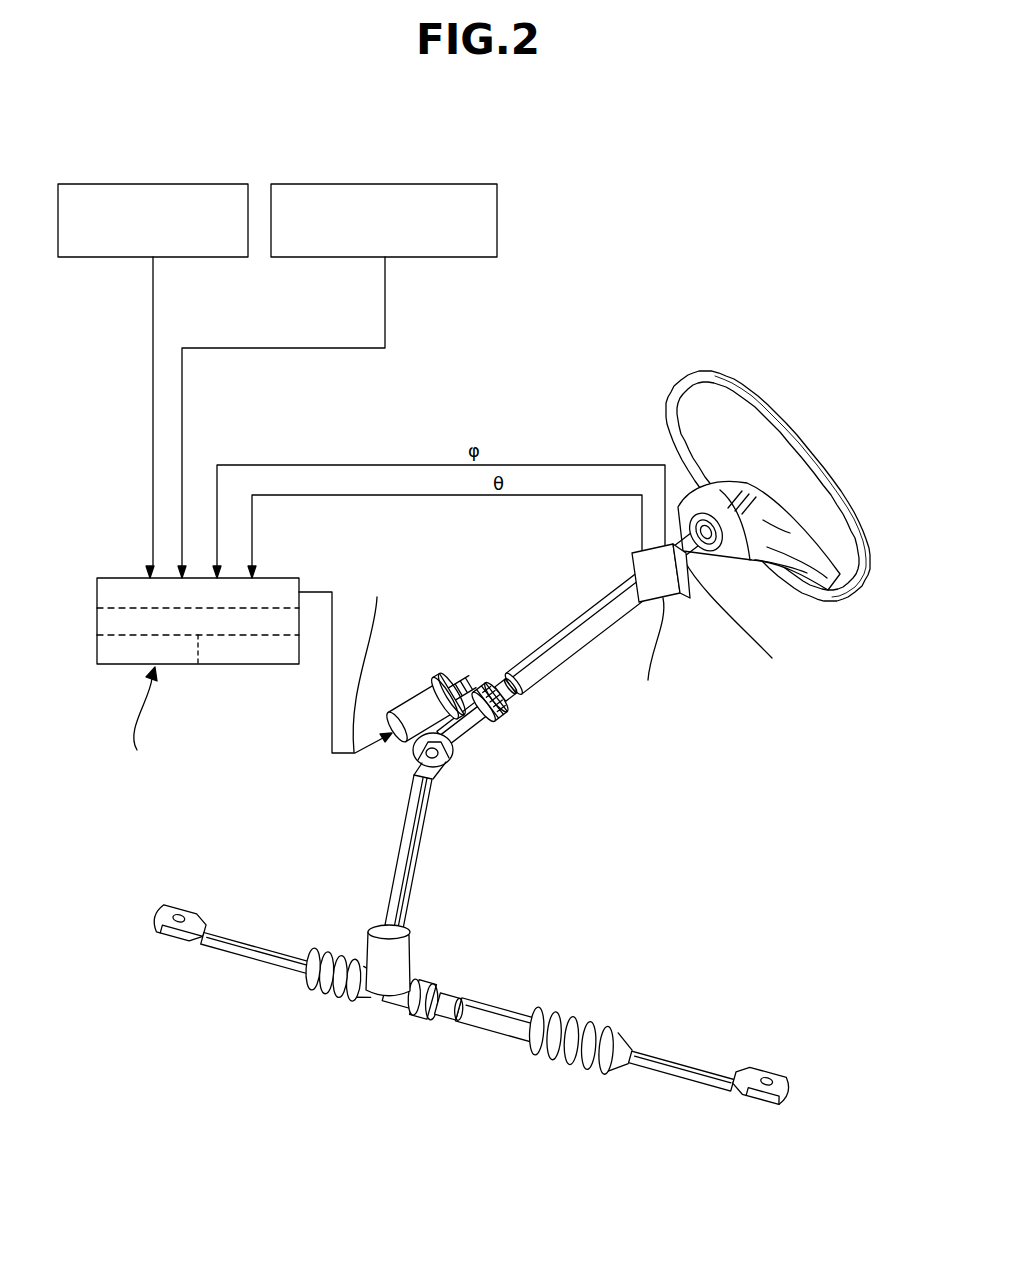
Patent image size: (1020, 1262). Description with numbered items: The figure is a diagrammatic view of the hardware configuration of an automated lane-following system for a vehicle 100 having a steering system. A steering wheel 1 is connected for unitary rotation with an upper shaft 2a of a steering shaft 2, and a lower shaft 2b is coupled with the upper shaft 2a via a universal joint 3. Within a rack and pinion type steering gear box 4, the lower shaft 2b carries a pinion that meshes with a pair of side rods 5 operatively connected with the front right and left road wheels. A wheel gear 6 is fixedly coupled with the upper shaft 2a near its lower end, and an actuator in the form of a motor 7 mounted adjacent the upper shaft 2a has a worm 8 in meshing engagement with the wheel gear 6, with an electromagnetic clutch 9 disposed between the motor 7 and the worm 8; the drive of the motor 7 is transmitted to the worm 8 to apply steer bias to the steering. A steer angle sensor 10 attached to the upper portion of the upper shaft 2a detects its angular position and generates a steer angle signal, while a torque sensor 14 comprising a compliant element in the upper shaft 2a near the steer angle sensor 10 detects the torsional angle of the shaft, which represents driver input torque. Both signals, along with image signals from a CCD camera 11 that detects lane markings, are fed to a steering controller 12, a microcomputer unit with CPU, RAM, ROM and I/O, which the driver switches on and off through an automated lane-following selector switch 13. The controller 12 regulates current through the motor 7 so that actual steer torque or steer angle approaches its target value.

The vehicle 100 is at (808, 404).
The steering wheel 1 is at (845, 500).
The steering shaft 2 is at (523, 748).
The upper shaft 2a is at (470, 742).
The lower shaft 2b is at (408, 878).
The universal joint 3 is at (411, 757).
The rack and pinion type steering gear box 4 is at (365, 940).
The side rods 5 is at (243, 957).
The wheel gear 6 is at (503, 712).
The motor 7 is at (412, 707).
The worm 8 is at (458, 687).
The electromagnetic clutch 9 is at (437, 688).
The steer angle sensor 10 is at (686, 563).
The CCD camera 11 is at (186, 184).
The steering controller 12 is at (118, 578).
The automated lane-following selector switch 13 is at (418, 184).
The torque sensor 14 is at (680, 555).